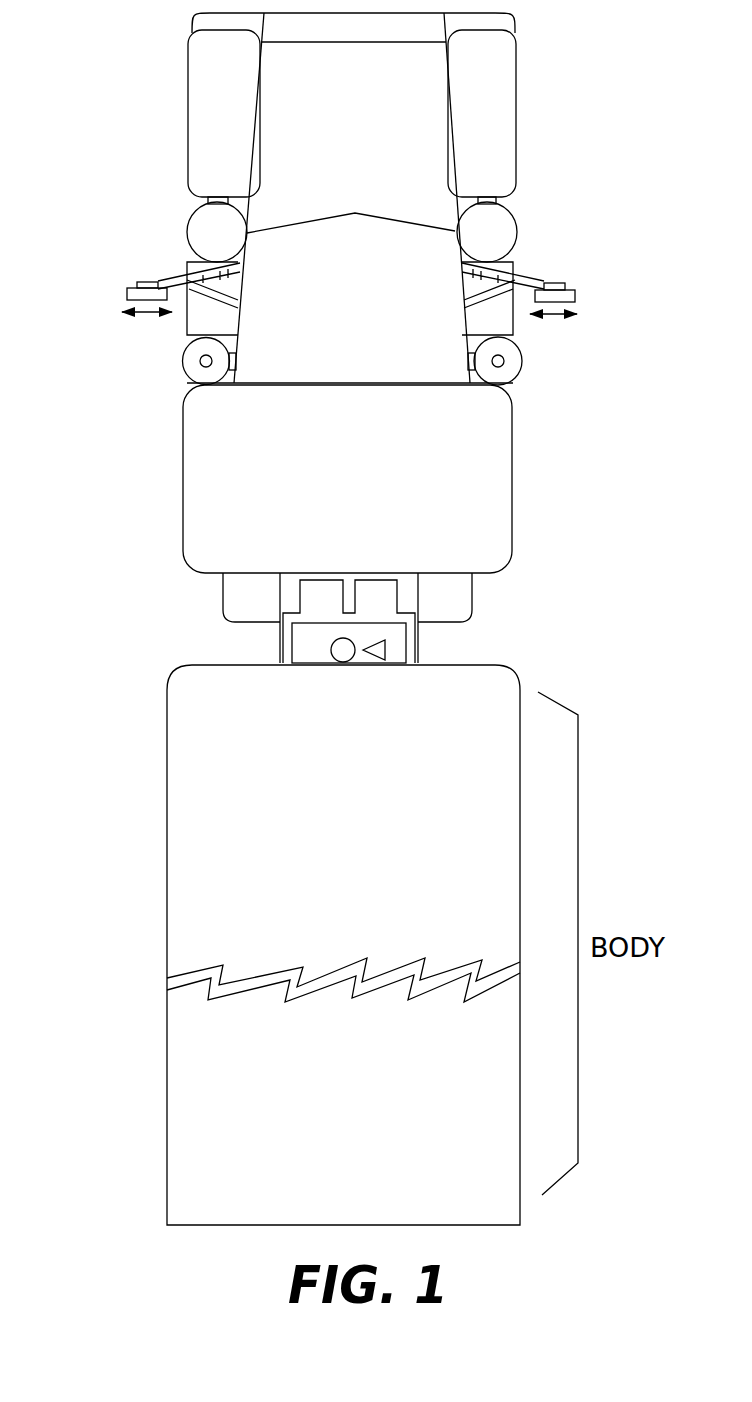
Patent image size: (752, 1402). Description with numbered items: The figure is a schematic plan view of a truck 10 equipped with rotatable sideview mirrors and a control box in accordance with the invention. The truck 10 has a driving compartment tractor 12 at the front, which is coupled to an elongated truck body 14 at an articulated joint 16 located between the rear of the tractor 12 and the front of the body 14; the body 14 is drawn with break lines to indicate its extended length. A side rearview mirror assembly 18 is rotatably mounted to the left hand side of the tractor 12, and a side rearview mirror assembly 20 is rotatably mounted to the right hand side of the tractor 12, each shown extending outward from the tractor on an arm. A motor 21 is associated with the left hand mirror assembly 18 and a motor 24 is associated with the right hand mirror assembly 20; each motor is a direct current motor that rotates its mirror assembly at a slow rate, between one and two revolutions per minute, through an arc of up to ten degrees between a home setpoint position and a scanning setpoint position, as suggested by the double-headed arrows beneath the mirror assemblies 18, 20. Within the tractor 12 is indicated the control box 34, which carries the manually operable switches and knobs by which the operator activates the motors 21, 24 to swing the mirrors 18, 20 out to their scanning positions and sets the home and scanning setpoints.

The truck 10 is at (512, 623).
The driving compartment tractor 12 is at (217, 313).
The elongated truck body 14 is at (160, 920).
The articulated joint 16 is at (418, 644).
The side rearview mirror assembly 18 is at (126, 295).
The side rearview mirror assembly 20 is at (578, 295).
The motor 21 is at (140, 283).
The motor 24 is at (563, 282).
The control box 34 is at (351, 282).